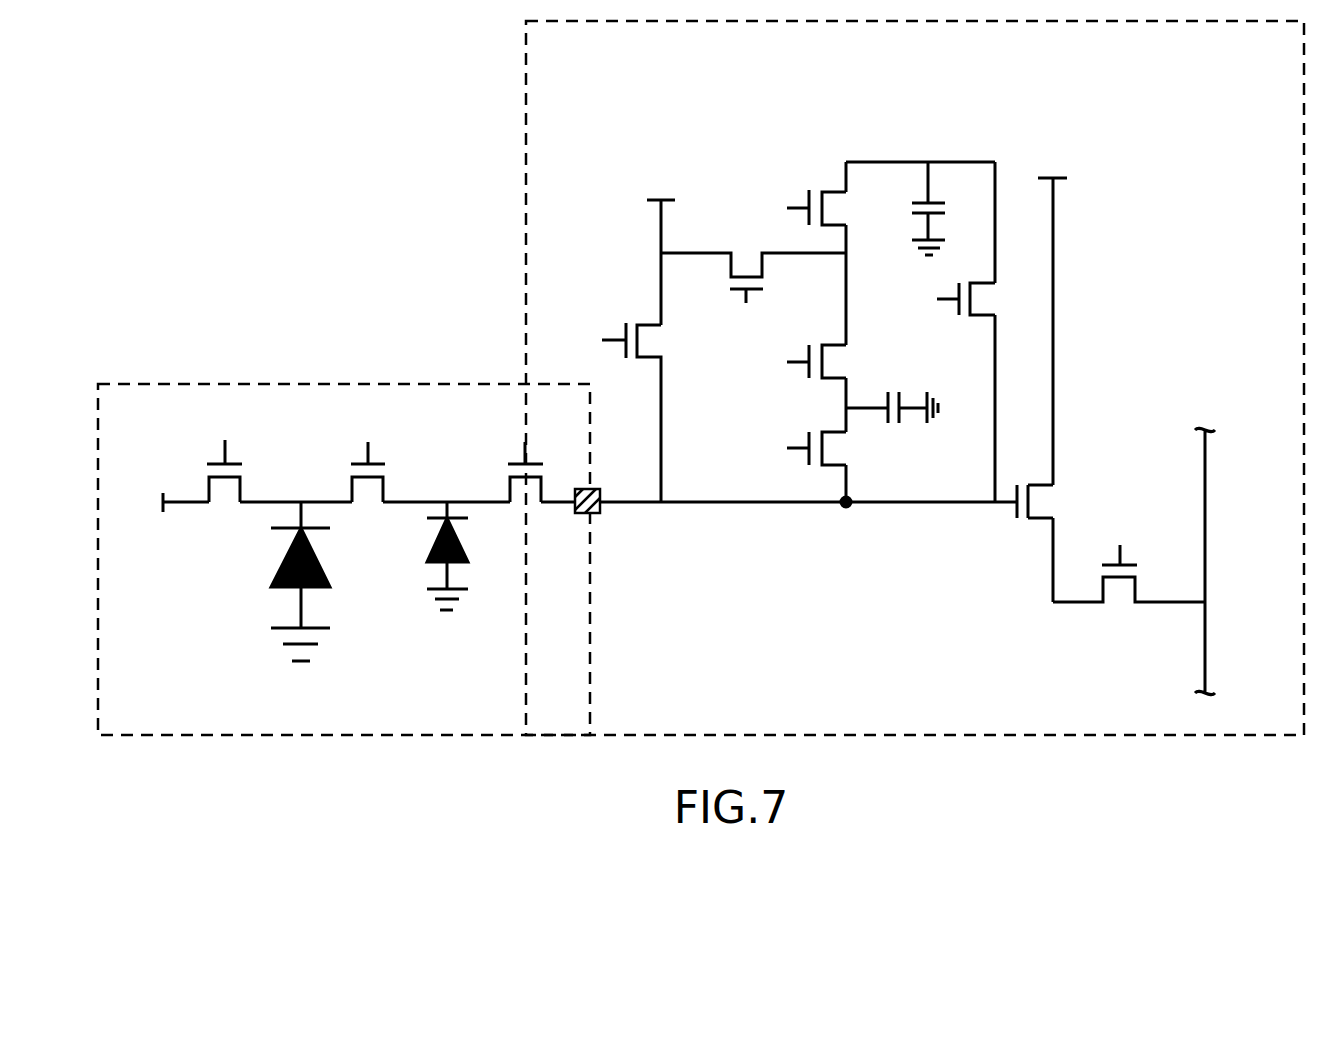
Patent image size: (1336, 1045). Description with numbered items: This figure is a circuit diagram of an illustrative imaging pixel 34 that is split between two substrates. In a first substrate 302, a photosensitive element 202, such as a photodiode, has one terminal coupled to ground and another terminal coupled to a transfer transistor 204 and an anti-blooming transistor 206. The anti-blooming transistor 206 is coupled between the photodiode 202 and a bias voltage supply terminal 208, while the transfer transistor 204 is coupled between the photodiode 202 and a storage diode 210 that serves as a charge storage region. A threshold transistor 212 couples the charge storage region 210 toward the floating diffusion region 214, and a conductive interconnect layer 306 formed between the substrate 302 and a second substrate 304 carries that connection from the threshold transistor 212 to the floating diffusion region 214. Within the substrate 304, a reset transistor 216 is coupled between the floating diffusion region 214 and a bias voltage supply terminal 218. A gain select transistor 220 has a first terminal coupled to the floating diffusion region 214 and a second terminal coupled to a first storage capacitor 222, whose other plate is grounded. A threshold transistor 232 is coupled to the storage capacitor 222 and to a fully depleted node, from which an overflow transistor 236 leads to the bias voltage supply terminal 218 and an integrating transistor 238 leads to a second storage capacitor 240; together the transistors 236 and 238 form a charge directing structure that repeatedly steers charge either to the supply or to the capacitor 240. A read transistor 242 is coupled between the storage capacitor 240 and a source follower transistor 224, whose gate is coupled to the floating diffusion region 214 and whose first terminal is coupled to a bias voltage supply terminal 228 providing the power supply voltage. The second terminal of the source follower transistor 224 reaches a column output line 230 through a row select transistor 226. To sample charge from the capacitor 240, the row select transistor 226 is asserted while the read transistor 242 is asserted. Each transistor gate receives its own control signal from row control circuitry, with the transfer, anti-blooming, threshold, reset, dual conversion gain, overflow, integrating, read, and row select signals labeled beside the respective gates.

The pixel 34 is at (275, 190).
The photosensitive element 202 is at (345, 590).
The transfer transistor 204 is at (340, 490).
The anti-blooming transistor 206 is at (192, 488).
The bias voltage supply terminal 208 is at (165, 506).
The storage diode 210 is at (470, 575).
The threshold transistor 212 is at (500, 490).
The floating diffusion region 214 is at (840, 510).
The reset transistor 216 is at (627, 318).
The bias voltage supply terminal 218 is at (648, 201).
The gain select transistor 220 is at (835, 478).
The first storage capacitor 222 is at (915, 390).
The source follower transistor 224 is at (1027, 527).
The row select transistor 226 is at (1118, 602).
The bias voltage supply terminal 228 is at (1058, 182).
The column output line 230 is at (1208, 655).
The threshold transistor 232 is at (805, 388).
The overflow transistor 236 is at (740, 245).
The integrating transistor 238 is at (815, 180).
The second storage capacitor 240 is at (913, 190).
The read transistor 242 is at (950, 280).
The substrate 302 is at (248, 383).
The substrate 304 is at (526, 148).
The conductive interconnect layer 306 is at (602, 512).